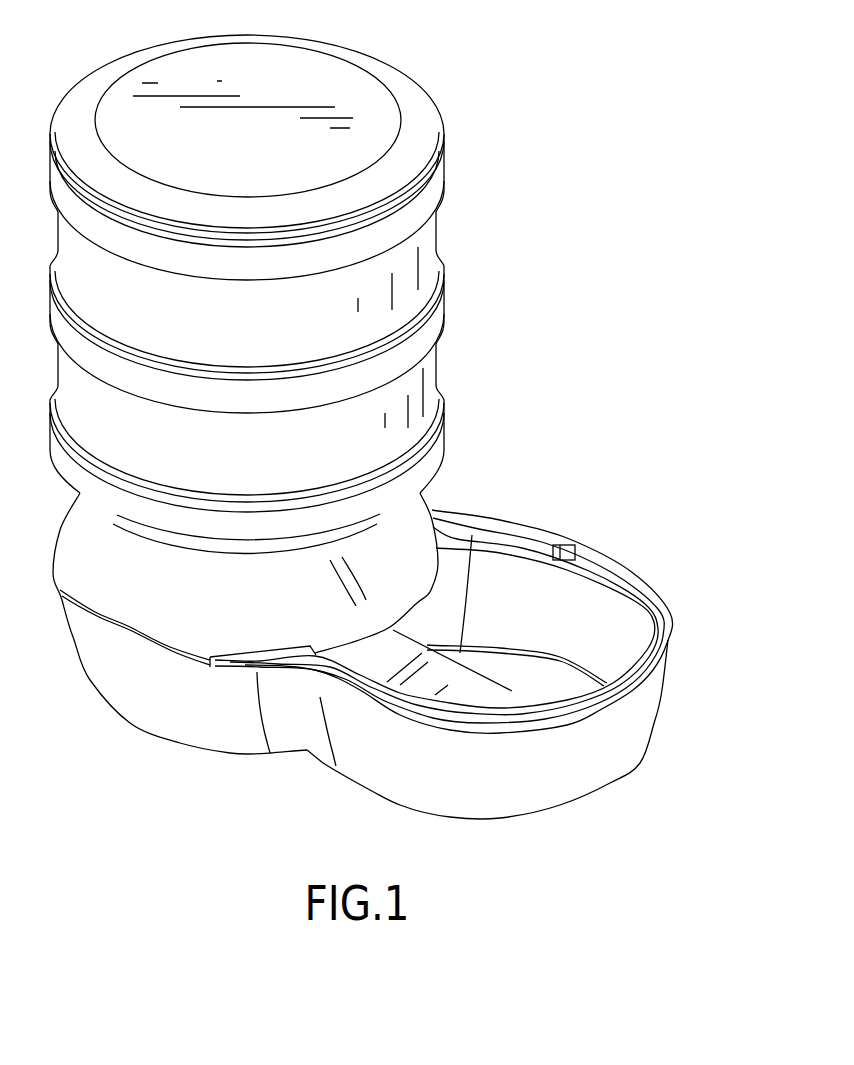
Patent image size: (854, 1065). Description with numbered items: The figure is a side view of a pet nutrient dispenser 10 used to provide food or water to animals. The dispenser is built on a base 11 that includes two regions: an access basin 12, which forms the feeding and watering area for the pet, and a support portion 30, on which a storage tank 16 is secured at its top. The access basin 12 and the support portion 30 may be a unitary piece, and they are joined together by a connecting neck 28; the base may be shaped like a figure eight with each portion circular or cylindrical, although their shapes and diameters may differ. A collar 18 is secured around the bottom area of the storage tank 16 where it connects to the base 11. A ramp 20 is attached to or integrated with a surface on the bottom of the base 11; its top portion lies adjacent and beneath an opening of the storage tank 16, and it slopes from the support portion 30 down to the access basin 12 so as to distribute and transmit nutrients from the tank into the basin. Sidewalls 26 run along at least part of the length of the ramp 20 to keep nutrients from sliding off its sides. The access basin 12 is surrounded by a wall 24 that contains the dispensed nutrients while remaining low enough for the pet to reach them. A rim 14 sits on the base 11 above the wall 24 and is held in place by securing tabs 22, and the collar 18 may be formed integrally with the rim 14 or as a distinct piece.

The pet nutrient dispenser 10 is at (478, 80).
The base 11 is at (633, 555).
The access basin 12 is at (650, 723).
The rim 14 is at (667, 610).
The storage tank 16 is at (443, 400).
The collar 18 is at (421, 516).
The ramp 20 is at (373, 678).
The securing tabs 22 is at (563, 552).
The wall 24 is at (508, 568).
The sidewalls 26 is at (507, 692).
The connecting neck 28 is at (312, 750).
The support portion 30 is at (97, 678).